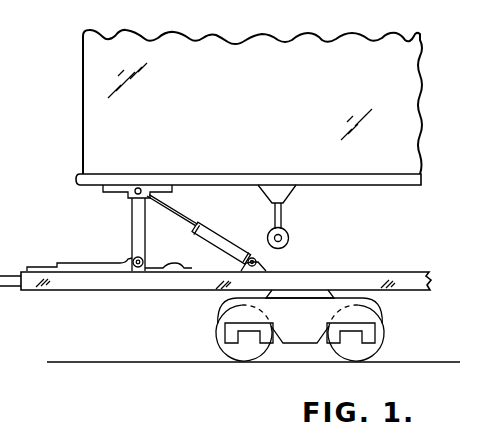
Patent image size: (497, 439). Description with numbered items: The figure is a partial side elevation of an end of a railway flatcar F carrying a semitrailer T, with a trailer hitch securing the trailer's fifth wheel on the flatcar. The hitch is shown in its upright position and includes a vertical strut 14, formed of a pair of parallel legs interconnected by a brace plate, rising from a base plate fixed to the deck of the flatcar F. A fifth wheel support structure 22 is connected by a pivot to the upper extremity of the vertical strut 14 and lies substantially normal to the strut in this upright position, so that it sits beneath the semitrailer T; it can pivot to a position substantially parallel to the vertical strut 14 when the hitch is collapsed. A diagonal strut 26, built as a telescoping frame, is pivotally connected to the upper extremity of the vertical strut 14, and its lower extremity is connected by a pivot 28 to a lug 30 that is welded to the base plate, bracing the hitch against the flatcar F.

The semitrailer T is at (262, 112).
The railway flatcar F is at (403, 273).
The fifth wheel support structure 22 is at (103, 192).
The vertical strut 14 is at (132, 233).
The diagonal strut 26 is at (222, 231).
The pivot 28 is at (240, 267).
The lug 30 is at (270, 266).